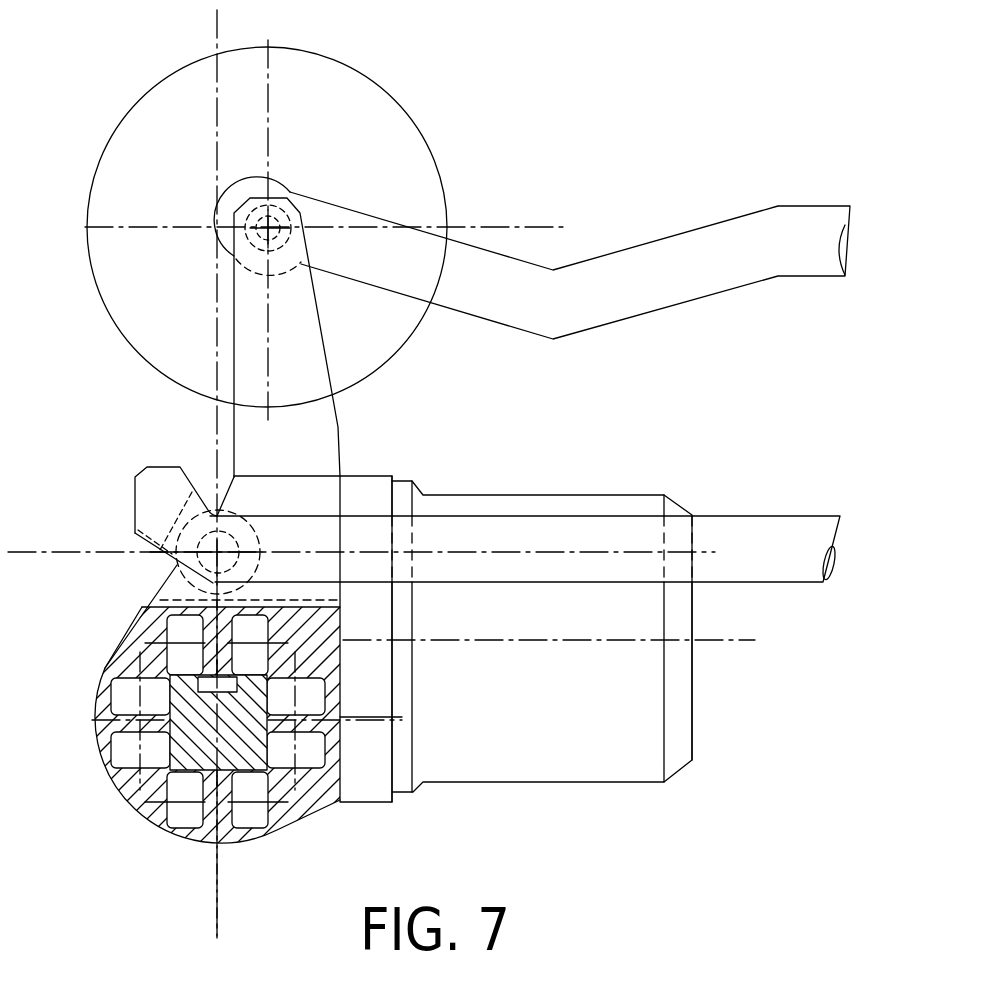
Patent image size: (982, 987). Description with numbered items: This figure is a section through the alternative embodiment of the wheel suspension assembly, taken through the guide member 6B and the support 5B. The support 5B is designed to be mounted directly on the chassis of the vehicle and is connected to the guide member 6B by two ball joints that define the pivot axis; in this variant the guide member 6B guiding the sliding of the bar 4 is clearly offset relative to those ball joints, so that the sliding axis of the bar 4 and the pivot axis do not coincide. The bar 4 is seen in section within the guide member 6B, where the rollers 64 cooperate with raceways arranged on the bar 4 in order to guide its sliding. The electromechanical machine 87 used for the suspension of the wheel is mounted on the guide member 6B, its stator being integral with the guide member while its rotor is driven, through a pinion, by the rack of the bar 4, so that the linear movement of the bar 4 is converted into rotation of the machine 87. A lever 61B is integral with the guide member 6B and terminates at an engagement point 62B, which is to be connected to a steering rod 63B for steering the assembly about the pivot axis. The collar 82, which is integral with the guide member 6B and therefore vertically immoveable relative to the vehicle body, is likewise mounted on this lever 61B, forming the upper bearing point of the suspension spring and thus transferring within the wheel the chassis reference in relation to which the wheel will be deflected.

The second collar 82 is at (161, 103).
The engagement point 62B is at (275, 222).
The steering rod 63B is at (700, 250).
The lever 61B is at (322, 446).
The support 5B is at (764, 533).
The electromechanical machine 87 is at (620, 718).
The bar 4 is at (187, 758).
The rollers 64 is at (183, 818).
The guide member 6B is at (283, 813).